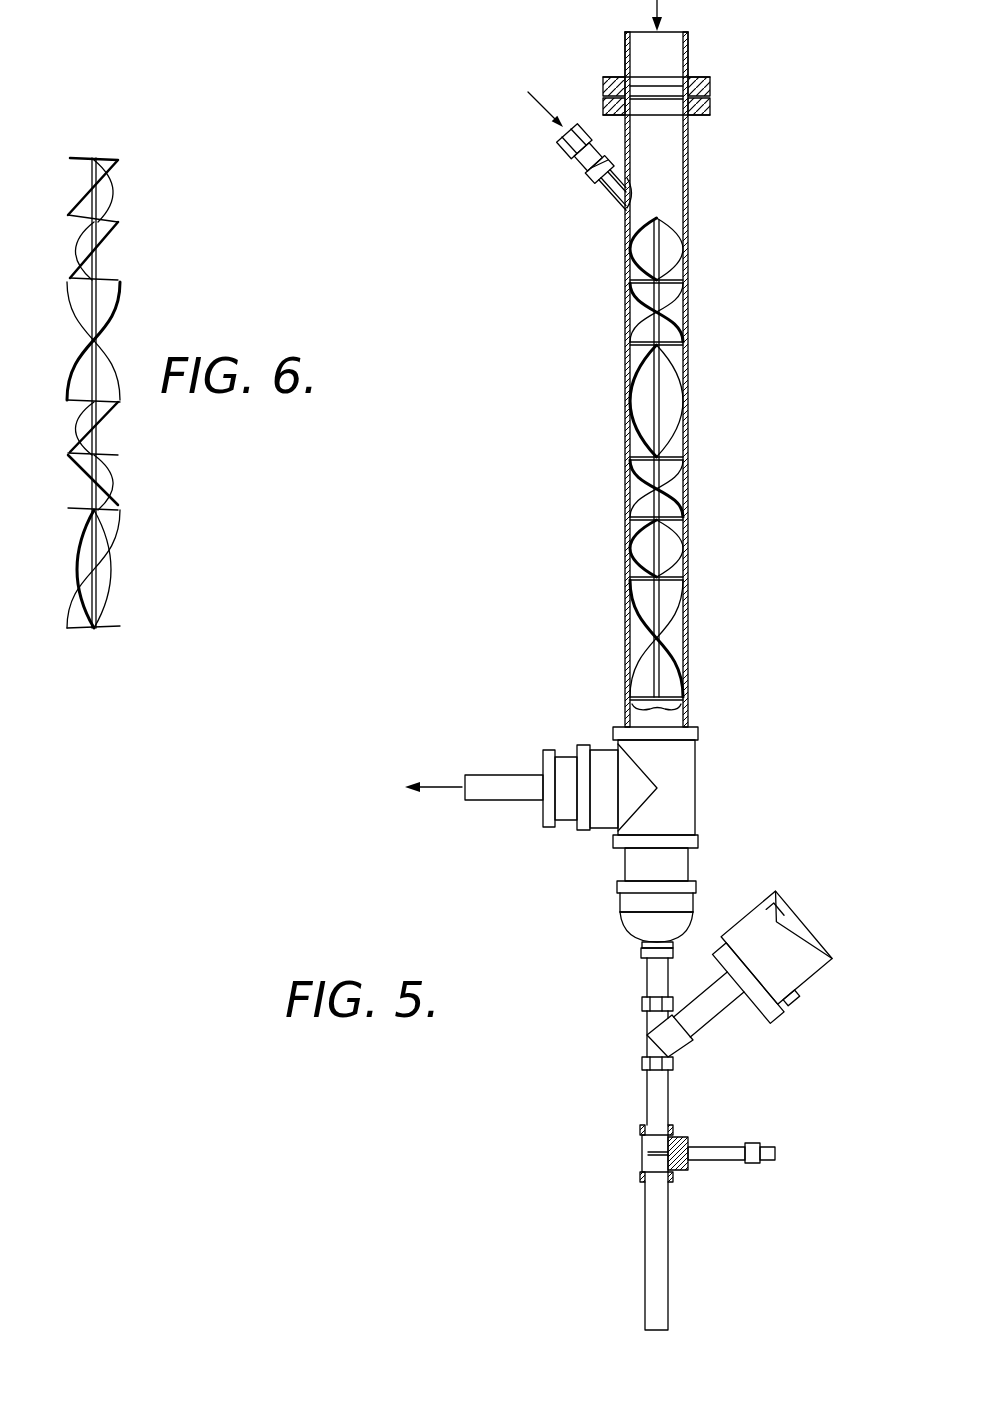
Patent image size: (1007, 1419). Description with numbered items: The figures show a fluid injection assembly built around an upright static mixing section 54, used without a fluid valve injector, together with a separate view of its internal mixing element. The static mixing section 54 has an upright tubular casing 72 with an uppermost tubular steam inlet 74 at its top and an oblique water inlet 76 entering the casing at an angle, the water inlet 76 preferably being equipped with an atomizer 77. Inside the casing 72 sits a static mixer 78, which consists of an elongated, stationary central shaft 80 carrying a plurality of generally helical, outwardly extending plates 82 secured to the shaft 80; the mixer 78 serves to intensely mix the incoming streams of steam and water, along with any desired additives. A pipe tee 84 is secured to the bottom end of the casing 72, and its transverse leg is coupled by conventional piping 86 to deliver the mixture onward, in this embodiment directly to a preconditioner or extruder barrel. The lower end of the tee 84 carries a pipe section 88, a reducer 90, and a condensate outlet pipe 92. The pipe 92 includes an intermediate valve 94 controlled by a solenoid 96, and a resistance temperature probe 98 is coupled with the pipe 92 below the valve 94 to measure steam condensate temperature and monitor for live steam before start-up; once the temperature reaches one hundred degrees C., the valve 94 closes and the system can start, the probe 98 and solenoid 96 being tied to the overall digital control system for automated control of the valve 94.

In FIG. 5, the static mixing section 54 is at (606, 321).
In FIG. 5, the upright tubular casing 72 is at (628, 620).
In FIG. 5, the uppermost tubular steam inlet 74 is at (689, 56).
In FIG. 5, the oblique water inlet 76 is at (613, 197).
In FIG. 5, the atomizer 77 is at (567, 152).
In FIG. 5, the static mixer 78 is at (656, 432).
In FIG. 6, the static mixer 78 is at (131, 393).
In FIG. 5, the central shaft 80 is at (652, 417).
In FIG. 6, the central shaft 80 is at (100, 208).
In FIG. 5, the helical plates 82 is at (670, 390).
In FIG. 6, the helical plates 82 is at (80, 358).
In FIG. 5, the pipe tee 84 is at (683, 780).
In FIG. 5, the piping 86 is at (500, 775).
In FIG. 5, the pipe section 88 is at (683, 865).
In FIG. 5, the reducer 90 is at (627, 920).
In FIG. 5, the condensate outlet pipe 92 is at (653, 1240).
In FIG. 5, the valve 94 is at (652, 1040).
In FIG. 5, the solenoid 96 is at (800, 965).
In FIG. 5, the resistance temperature probe 98 is at (718, 1155).